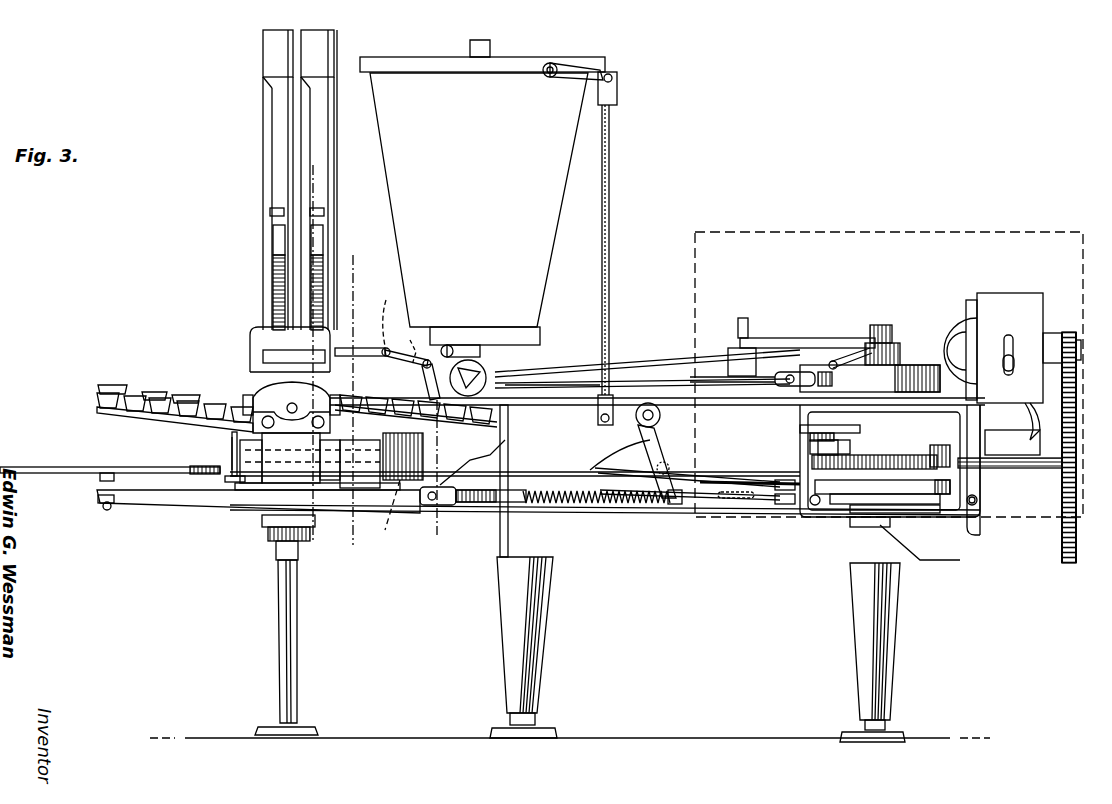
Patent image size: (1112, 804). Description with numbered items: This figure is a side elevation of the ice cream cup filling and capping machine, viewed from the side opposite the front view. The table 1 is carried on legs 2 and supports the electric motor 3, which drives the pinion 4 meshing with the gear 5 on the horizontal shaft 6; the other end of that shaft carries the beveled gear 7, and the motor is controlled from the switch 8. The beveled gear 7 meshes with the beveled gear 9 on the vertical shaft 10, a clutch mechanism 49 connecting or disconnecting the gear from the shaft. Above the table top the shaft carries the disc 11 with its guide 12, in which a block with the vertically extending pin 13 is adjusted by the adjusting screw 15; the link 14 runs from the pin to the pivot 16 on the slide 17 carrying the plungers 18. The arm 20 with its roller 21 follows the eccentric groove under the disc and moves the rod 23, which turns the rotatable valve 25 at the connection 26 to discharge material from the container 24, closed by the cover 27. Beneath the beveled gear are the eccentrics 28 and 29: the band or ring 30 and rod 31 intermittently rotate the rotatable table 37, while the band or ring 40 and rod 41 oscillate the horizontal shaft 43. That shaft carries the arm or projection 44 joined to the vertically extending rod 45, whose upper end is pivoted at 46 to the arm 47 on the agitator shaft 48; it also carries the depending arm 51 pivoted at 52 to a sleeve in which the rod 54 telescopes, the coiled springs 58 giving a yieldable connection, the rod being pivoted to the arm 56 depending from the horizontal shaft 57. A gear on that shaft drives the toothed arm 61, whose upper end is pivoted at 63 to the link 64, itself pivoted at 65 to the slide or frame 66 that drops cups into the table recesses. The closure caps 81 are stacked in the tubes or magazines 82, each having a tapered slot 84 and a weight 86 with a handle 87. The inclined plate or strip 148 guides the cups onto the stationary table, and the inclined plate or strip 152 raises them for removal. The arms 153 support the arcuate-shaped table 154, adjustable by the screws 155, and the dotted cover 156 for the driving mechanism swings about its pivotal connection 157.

The table 1 is at (560, 526).
The legs 2 is at (280, 614).
The electric motor 3 is at (962, 318).
The pinion 4 is at (353, 268).
The gear 5 is at (318, 180).
The horizontal shaft 6 is at (1000, 460).
The beveled gear 7 is at (932, 446).
The switch 8 is at (1022, 300).
The beveled gear 9 is at (895, 455).
The vertical shaft 10 is at (890, 420).
The disc 11 is at (920, 370).
The guide 12 is at (895, 345).
The vertically extending pin 13 is at (880, 325).
The link 14 is at (797, 340).
The adjusting screw 15 is at (838, 362).
The pivotal connection 16 is at (745, 332).
The slide 17 is at (700, 378).
The plungers 18 is at (625, 380).
The arm 20 is at (815, 410).
The roller 21 is at (825, 372).
The rod 23 is at (550, 370).
The container 24 is at (479, 200).
The rotatable valve 25 is at (525, 340).
The connection 26 is at (458, 345).
The cover 27 is at (418, 58).
The eccentric 28 is at (940, 508).
The eccentric 29 is at (910, 520).
The band or ring 30 is at (850, 515).
The rod 31 is at (758, 488).
The rotatable table 37 is at (180, 400).
The band or ring 40 is at (860, 530).
The rod 41 is at (772, 490).
The horizontal shaft 43 is at (662, 415).
The arm or projection 44 is at (620, 424).
The vertically extending rod 45 is at (614, 252).
The pivotal connection 46 is at (618, 74).
The arm 47 is at (598, 66).
The shaft 48 is at (555, 60).
The clutch mechanism 49 is at (830, 440).
The arm 51 is at (720, 478).
The pivotal connection 52 is at (684, 506).
The rod 54 is at (488, 490).
The arm 56 is at (455, 488).
The horizontal shaft 57 is at (402, 500).
The coiled springs 58 is at (630, 505).
The arm 61 is at (433, 362).
The pivot 63 is at (432, 360).
The link 64 is at (413, 340).
The pivotal connection 65 is at (388, 300).
The slide or frame 66 is at (360, 348).
The closure caps 81 is at (312, 264).
The tubes or magazines 82 is at (300, 160).
The tapered slot 84 is at (278, 135).
The weight 86 is at (312, 226).
The handle 87 is at (315, 212).
The inclined plate or strip 148 is at (383, 405).
The inclined plate or strip 152 is at (175, 430).
The arms 153 is at (185, 505).
The arcuate-shaped table 154 is at (78, 458).
The screws 155 is at (105, 510).
The cover 156 is at (966, 234).
The pivotal connection 157 is at (978, 500).